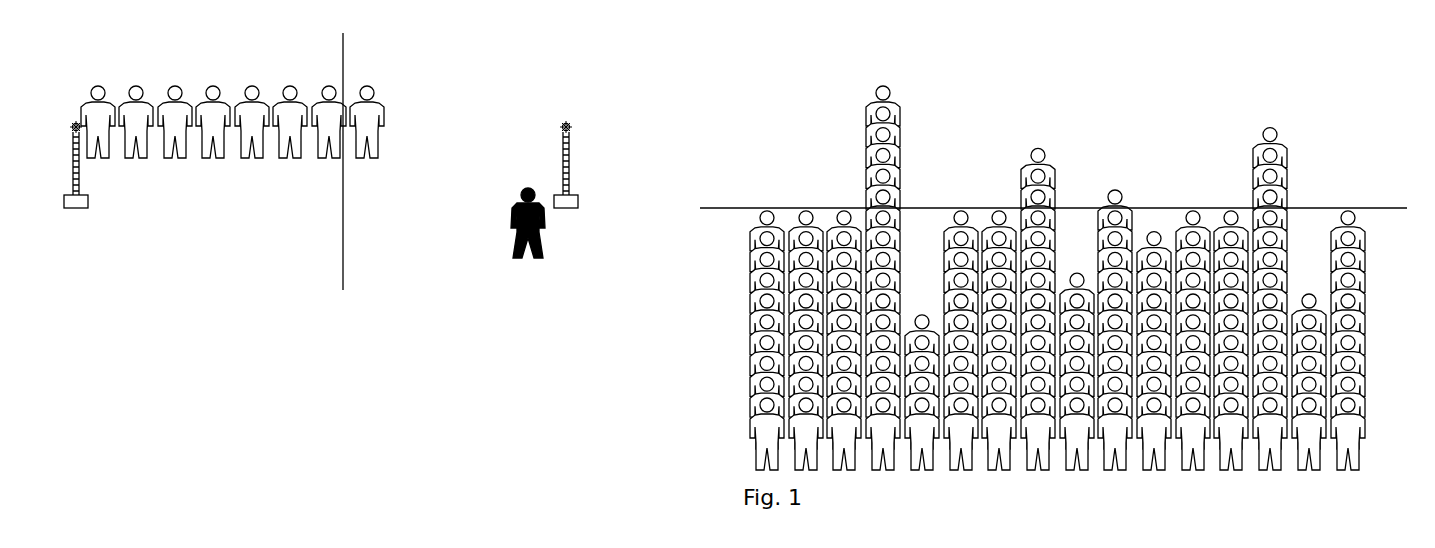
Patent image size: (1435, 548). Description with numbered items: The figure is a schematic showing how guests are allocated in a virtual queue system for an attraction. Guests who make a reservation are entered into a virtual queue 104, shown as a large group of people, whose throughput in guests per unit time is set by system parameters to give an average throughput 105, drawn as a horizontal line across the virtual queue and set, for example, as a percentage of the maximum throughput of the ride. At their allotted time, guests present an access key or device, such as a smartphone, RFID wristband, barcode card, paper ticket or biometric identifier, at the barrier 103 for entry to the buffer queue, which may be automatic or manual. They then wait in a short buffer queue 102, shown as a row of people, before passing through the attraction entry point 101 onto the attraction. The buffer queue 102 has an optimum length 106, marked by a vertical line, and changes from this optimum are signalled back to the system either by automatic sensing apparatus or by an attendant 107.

The attraction entry point 101 is at (81, 208).
The buffer queue 102 is at (217, 158).
The barrier for entry to the buffer queue 103 is at (578, 164).
The virtual queue 104 is at (903, 160).
The average throughput 105 is at (1082, 205).
The optimum length 106 is at (343, 225).
The attendant 107 is at (527, 188).